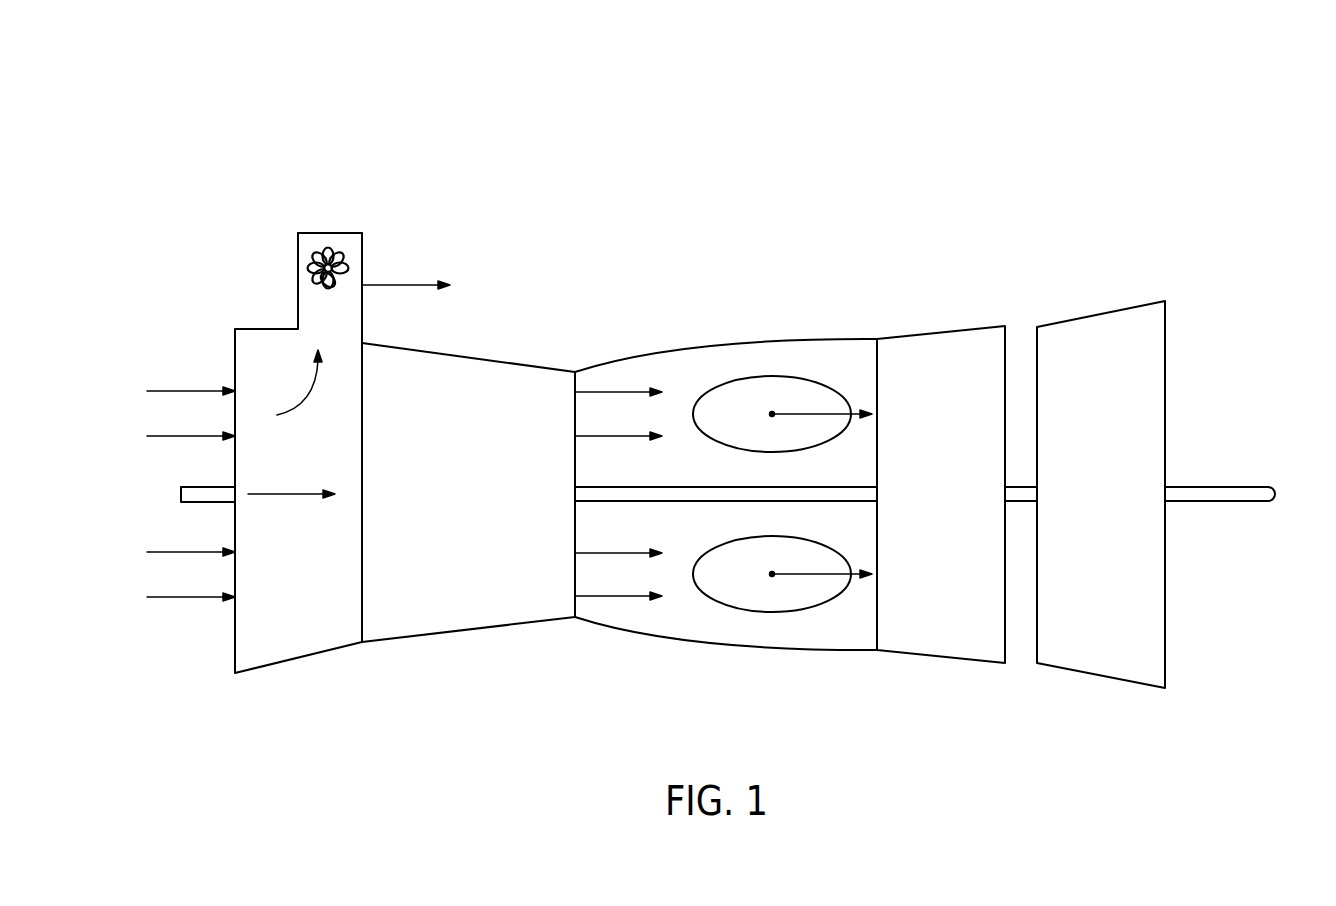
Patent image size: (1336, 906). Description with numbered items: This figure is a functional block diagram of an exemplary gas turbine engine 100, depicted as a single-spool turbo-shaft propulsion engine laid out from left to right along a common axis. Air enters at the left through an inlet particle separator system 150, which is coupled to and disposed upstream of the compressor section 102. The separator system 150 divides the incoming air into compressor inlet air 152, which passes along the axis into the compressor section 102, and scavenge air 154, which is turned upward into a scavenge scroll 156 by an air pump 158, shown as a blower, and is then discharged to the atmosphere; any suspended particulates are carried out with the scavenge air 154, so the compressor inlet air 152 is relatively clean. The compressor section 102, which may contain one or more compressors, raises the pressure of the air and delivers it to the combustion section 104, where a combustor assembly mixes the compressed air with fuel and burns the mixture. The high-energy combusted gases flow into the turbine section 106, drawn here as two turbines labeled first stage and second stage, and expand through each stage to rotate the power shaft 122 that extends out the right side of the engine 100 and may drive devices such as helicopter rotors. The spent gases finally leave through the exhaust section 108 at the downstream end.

The gas turbine engine 100 is at (806, 265).
The compressor section 102 is at (576, 212).
The combustion section 104 is at (576, 212).
The turbine section 106 is at (1165, 212).
The exhaust section 108 is at (1165, 212).
The power shaft 122 is at (1222, 487).
The inlet particle separator system 150 is at (303, 659).
The compressor inlet air 152 is at (283, 496).
The scavenge air 154 is at (305, 412).
The scavenge scroll 156 is at (330, 233).
The air pump 158 is at (348, 268).